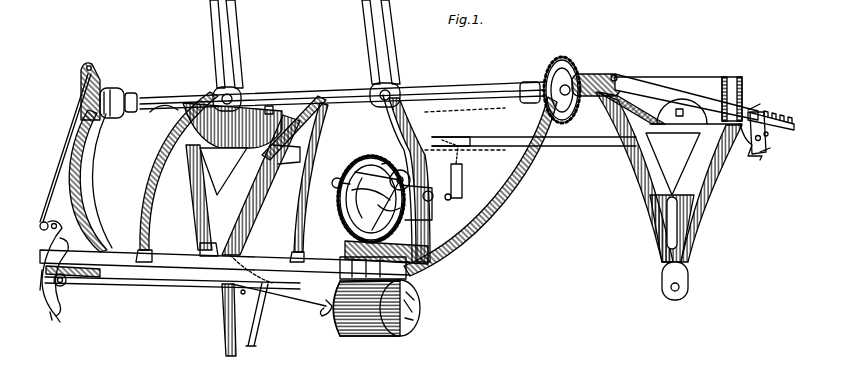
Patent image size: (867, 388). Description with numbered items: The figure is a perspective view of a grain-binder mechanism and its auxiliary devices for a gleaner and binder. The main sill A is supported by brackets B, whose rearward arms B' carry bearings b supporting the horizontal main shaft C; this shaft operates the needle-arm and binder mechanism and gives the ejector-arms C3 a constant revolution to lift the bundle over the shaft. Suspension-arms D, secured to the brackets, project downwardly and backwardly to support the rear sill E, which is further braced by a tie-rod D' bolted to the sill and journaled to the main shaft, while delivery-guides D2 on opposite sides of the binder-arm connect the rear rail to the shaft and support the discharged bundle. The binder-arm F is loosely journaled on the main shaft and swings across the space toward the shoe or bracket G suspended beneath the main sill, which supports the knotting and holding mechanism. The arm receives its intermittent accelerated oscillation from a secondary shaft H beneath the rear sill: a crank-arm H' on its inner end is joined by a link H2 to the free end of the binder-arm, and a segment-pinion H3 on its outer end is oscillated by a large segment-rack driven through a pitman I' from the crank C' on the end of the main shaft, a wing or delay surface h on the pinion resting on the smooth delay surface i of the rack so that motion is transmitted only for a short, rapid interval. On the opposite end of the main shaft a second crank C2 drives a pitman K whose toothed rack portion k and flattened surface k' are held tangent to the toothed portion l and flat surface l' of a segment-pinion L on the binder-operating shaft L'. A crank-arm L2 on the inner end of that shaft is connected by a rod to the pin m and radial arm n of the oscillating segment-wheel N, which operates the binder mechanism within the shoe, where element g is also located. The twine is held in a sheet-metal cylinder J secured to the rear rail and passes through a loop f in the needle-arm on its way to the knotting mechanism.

The main shaft C is at (322, 98).
The bearings b is at (131, 96).
The crank C' is at (98, 91).
The pitman I' is at (65, 152).
The ejector-arms C3 is at (302, 55).
The crank C2 is at (576, 74).
The pitman K is at (665, 97).
The brackets B is at (462, 196).
The arms B' is at (419, 109).
The binder-arm F is at (292, 130).
The suspension-arms D is at (313, 186).
The delivery-guides D2 is at (279, 177).
The tie-rod D' is at (220, 250).
The main sill A is at (466, 129).
The rear sill E is at (225, 263).
The secondary shaft H is at (172, 284).
The segment-pinion H3 is at (64, 285).
The crank-arm H' is at (222, 320).
The link H2 is at (255, 314).
The segment-pinion L is at (396, 214).
The wing or delay surface h is at (36, 286).
The delay surface i is at (55, 320).
The toothed rack portion k is at (771, 115).
The flattened surface k' is at (759, 101).
The flat surface l' is at (773, 133).
The toothed portion l is at (771, 151).
The binder-operating shaft L' is at (534, 148).
The crank-arm L2 is at (449, 149).
The shoe or bracket G is at (452, 169).
The pin g is at (454, 195).
The segment-wheel N is at (385, 205).
The radial arm n is at (382, 153).
The pin m is at (335, 183).
The sheet-metal cylinder J is at (376, 308).
The loop f is at (282, 306).